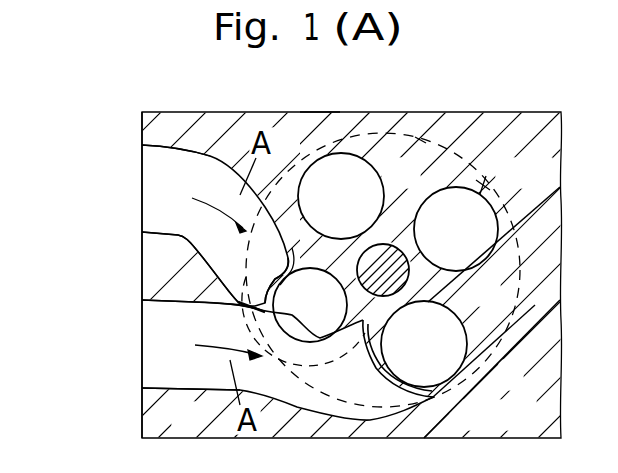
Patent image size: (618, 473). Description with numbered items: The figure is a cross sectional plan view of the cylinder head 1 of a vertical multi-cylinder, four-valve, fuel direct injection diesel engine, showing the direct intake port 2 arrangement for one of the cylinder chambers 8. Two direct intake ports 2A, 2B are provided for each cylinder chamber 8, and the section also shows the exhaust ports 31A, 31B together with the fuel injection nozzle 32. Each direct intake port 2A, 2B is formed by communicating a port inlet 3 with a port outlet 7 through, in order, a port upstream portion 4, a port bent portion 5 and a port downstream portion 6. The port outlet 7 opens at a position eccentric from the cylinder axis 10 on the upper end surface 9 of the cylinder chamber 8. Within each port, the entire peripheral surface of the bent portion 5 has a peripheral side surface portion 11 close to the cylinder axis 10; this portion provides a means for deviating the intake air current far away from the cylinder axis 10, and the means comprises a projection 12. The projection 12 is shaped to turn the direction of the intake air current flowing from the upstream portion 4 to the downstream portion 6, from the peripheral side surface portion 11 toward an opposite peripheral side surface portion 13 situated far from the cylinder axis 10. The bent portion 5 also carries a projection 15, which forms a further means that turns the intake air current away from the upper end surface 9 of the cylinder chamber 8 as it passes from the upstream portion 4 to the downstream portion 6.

The cylinder head 1 is at (505, 118).
The direct intake port 2 is at (46, 213).
The direct intake port 2A is at (175, 206).
The direct intake port 2B is at (186, 327).
The port inlet 3 is at (140, 178).
The port upstream portion 4 is at (219, 170).
The port bent portion 5 is at (222, 265).
The port downstream portion 6 is at (400, 320).
The port outlet 7 is at (363, 325).
The cylinder chamber 8 is at (420, 140).
The upper end surface 9 is at (440, 147).
The cylinder axis 10 is at (385, 270).
The peripheral side surface portion 11 is at (328, 247).
The projection 12 is at (298, 268).
The opposite peripheral side surface portion 13 is at (235, 303).
The projection 15 is at (275, 238).
The exhaust port 31A is at (483, 185).
The exhaust port 31B is at (330, 118).
The fuel injection nozzle 32 is at (385, 246).